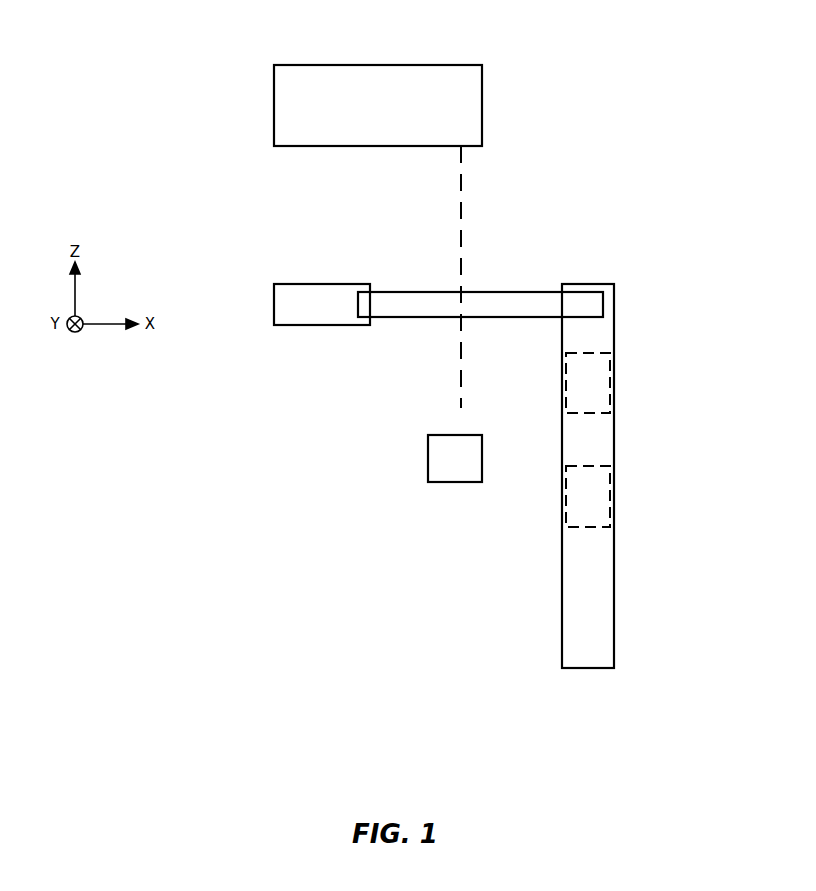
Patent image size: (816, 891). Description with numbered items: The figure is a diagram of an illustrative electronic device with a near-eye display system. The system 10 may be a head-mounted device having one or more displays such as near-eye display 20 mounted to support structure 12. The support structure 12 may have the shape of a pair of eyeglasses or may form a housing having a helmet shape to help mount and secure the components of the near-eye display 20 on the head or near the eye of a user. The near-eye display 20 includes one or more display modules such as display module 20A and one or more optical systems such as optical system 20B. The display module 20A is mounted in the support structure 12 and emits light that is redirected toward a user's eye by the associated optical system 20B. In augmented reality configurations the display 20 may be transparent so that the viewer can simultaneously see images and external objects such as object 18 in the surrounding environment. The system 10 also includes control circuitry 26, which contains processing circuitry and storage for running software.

The system 10 is at (698, 265).
The support structure 12 is at (308, 284).
The object 18 is at (482, 100).
The near-eye display 20 is at (544, 270).
The display module 20A is at (600, 392).
The optical system 20B is at (493, 292).
The control circuitry 26 is at (600, 500).